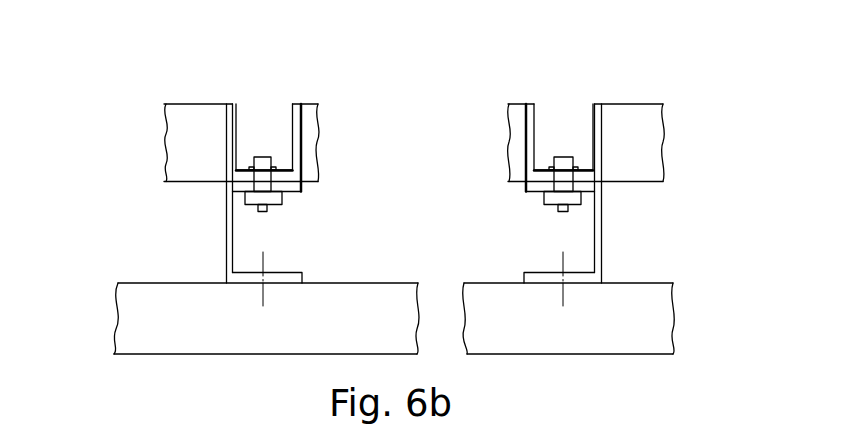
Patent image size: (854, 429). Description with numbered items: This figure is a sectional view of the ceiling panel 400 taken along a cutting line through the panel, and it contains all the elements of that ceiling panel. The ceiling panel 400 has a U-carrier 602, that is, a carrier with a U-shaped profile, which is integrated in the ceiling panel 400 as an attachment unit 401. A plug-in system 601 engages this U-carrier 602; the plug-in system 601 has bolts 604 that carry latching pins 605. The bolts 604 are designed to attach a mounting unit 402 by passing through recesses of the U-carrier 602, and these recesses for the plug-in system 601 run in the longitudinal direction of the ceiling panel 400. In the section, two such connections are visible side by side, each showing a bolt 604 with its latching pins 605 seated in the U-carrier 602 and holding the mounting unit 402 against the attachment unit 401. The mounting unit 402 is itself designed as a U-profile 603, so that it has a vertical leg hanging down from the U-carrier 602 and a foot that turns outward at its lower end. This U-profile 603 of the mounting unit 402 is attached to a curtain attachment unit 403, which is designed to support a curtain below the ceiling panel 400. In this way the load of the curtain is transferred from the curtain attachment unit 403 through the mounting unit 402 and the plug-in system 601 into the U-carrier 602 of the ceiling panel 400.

The ceiling panel 400 is at (149, 180).
The attachment unit 401 is at (239, 125).
The mounting unit 402 is at (225, 208).
The curtain attachment unit 403 is at (172, 0).
The plug-in system 601 is at (265, 157).
The U-carrier 602 is at (225, 127).
The U-profile 603 is at (228, 242).
The bolt 604 is at (282, 201).
The latching pin 605 is at (251, 167).